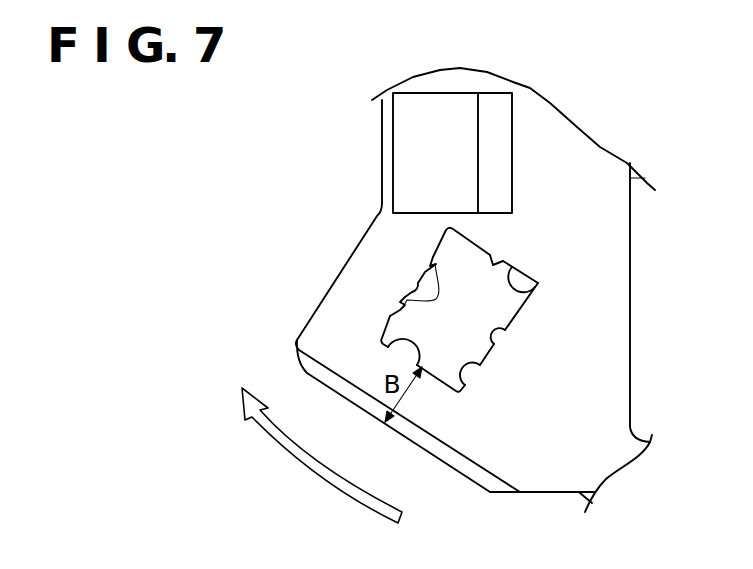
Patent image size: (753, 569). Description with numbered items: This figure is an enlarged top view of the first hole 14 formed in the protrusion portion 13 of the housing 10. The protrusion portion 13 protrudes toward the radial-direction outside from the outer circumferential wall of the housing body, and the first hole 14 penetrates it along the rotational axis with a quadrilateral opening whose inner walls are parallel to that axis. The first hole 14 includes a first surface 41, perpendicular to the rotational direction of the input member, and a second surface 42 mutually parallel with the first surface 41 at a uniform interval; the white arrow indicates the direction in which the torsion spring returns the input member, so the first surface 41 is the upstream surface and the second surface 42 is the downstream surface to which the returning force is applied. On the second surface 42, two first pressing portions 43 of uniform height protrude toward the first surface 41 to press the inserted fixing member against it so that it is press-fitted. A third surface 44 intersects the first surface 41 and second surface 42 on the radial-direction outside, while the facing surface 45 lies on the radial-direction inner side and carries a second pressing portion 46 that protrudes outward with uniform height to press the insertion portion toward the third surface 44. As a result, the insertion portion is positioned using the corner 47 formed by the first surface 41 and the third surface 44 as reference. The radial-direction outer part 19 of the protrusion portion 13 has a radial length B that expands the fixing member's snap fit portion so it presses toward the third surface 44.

The housing 10 is at (592, 175).
The protrusion portion 13 is at (394, 363).
The first hole 14 is at (458, 273).
The radial-direction outer part 19 is at (373, 372).
The first surface 41 is at (465, 323).
The second surface 42 is at (412, 288).
The first pressing portion 43 is at (428, 299).
The third surface 44 is at (386, 344).
The surface facing the third surface 45 is at (538, 284).
The second pressing portion 46 is at (493, 265).
The corner 47 is at (481, 374).